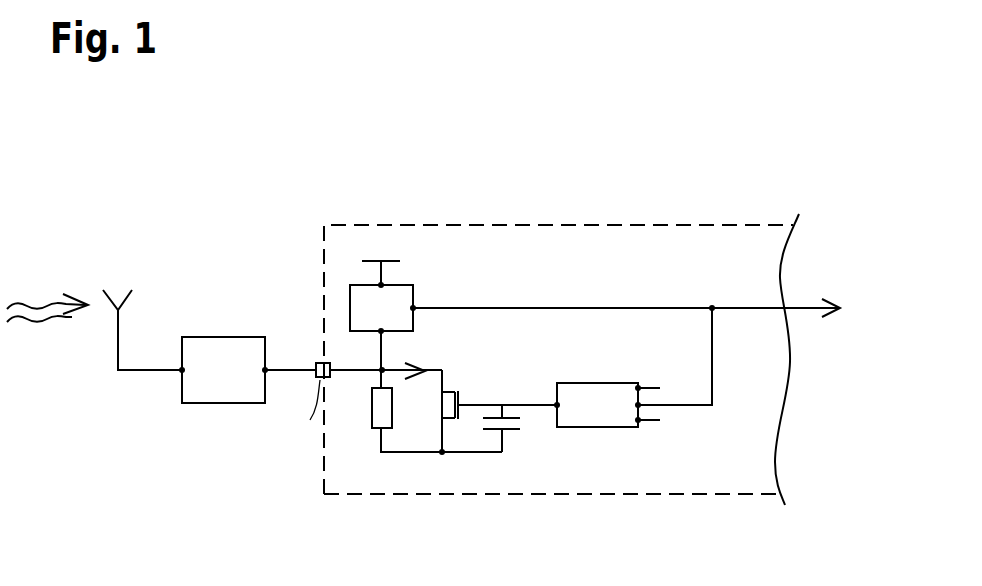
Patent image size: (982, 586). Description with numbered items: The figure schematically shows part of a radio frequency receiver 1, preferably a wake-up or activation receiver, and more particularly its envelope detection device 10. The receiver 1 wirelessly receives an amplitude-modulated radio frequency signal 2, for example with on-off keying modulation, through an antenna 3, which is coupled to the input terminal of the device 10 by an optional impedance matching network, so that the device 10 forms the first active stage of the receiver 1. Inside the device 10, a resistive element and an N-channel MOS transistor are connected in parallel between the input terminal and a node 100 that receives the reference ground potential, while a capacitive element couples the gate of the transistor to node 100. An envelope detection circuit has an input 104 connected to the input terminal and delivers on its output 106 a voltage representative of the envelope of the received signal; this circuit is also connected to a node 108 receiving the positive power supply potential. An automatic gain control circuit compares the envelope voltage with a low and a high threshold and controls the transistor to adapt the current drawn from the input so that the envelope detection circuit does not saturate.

The radio frequency receiver 1 is at (509, 312).
The radio frequency signal 2 is at (30, 302).
The antenna 3 is at (118, 292).
The envelope detection device 10 is at (755, 225).
The node 100 is at (442, 452).
The input 104 is at (382, 333).
The output 106 is at (415, 300).
The node 108 is at (380, 282).